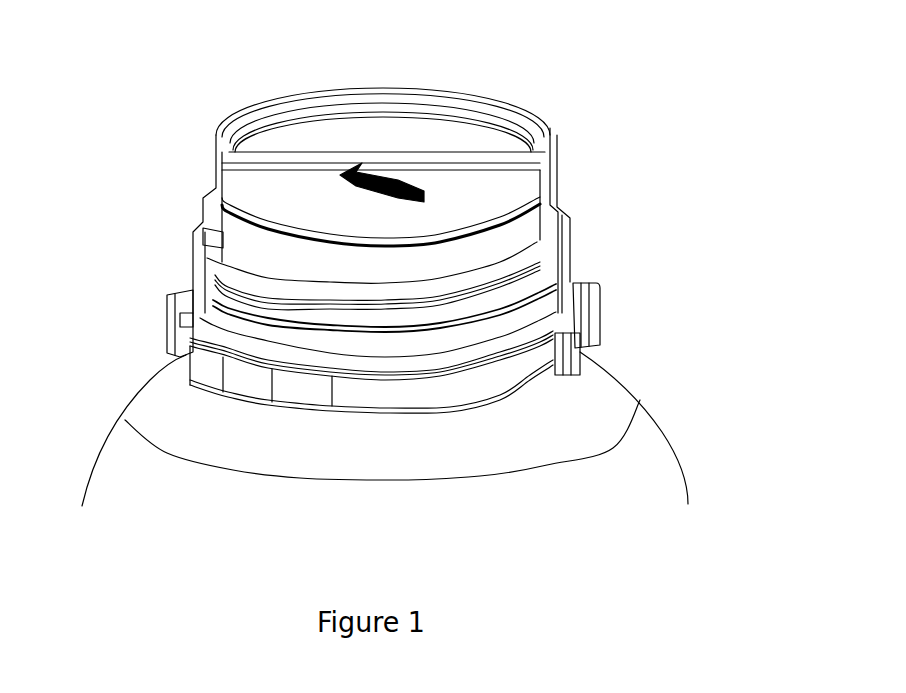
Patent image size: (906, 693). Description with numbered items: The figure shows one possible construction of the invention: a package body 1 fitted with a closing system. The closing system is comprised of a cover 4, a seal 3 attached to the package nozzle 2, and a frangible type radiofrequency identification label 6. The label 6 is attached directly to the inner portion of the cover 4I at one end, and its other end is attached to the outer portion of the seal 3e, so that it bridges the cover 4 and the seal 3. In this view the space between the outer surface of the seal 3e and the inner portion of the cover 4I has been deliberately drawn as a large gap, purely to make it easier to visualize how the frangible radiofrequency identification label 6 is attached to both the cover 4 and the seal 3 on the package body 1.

The package body 1 is at (622, 430).
The package nozzle 2 is at (566, 285).
The seal 3 is at (558, 205).
The outer portion of the seal 3e is at (405, 193).
The cover 4 is at (540, 112).
The inner portion of the cover 4I is at (342, 165).
The frangible type radiofrequency identification label 6 is at (380, 178).